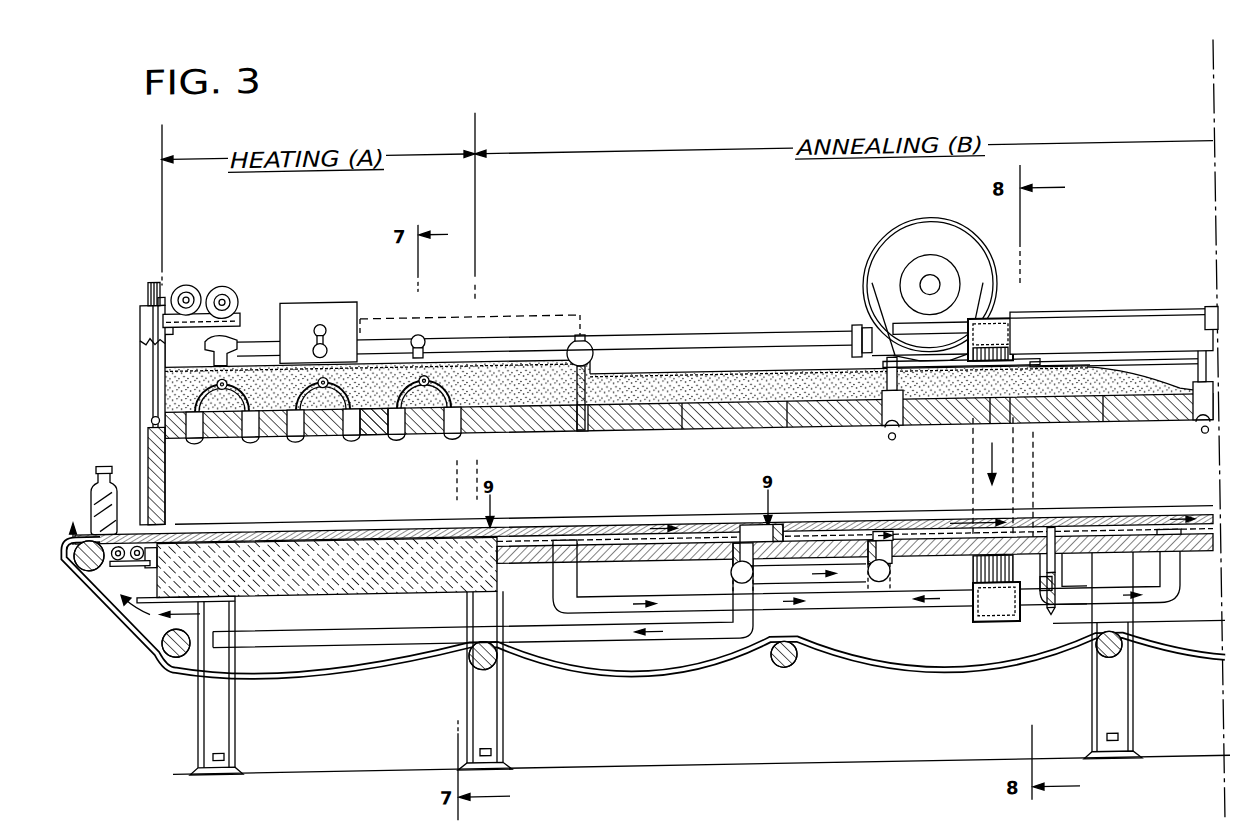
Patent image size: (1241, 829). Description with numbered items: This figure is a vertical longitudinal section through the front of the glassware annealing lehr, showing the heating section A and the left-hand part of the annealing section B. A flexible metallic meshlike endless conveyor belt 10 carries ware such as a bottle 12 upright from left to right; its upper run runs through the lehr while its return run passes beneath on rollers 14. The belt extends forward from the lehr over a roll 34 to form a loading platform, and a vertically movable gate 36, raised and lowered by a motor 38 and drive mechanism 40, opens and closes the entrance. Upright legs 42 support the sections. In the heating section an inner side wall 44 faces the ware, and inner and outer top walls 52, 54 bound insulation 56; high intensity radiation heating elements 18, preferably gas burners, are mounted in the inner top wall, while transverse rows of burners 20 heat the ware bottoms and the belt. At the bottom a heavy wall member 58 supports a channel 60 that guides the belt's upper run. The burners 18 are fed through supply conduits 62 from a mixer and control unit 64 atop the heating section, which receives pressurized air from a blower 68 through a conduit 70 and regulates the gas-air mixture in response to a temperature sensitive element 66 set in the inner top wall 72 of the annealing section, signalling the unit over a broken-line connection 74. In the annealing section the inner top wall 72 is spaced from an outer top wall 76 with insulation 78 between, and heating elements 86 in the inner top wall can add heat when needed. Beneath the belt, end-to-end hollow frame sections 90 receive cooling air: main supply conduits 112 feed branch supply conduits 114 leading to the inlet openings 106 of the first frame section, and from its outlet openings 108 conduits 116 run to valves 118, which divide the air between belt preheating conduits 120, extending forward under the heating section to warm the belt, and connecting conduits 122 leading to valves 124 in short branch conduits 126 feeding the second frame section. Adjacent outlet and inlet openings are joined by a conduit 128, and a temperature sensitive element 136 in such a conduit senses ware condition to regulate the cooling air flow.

The conveyor belt 10 is at (129, 528).
The bottle 12 is at (91, 495).
The rollers 14 is at (158, 652).
The heating elements 18 is at (253, 446).
The burners 20 is at (127, 558).
The roll 34 is at (79, 560).
The gate 36 is at (158, 501).
The motor 38 is at (222, 284).
The drive mechanism 40 is at (152, 279).
The legs 42 is at (212, 723).
The inner side wall 44 is at (306, 504).
The inner top wall 52 is at (379, 436).
The outer top wall 54 is at (456, 364).
The insulation 56 is at (484, 377).
The heavy wall member 58 is at (368, 551).
The channel 60 is at (419, 540).
The supply conduits 62 is at (207, 343).
The mixer and control unit 64 is at (314, 306).
The temperature sensitive element 66 is at (584, 346).
The blower 68 is at (893, 232).
The conduit 70 is at (747, 338).
The inner top wall 72 is at (630, 433).
The connection 74 is at (508, 318).
The outer top wall 76 is at (668, 377).
The insulation 78 is at (763, 378).
The heating elements 86 is at (889, 424).
The hollow frame sections 90 is at (679, 538).
The inlet openings 106 is at (561, 540).
The outlet openings 108 is at (745, 537).
The main supply conduits 112 is at (1115, 325).
The branch supply conduits 114 is at (821, 609).
The conduits 116 is at (728, 560).
The valves 118 is at (730, 584).
The belt preheating conduits 120 is at (613, 645).
The connecting conduits 122 is at (818, 572).
The valves 124 is at (891, 583).
The short branch conduits 126 is at (890, 541).
The conduit 128 is at (1169, 612).
The temperature sensitive element 136 is at (1047, 604).